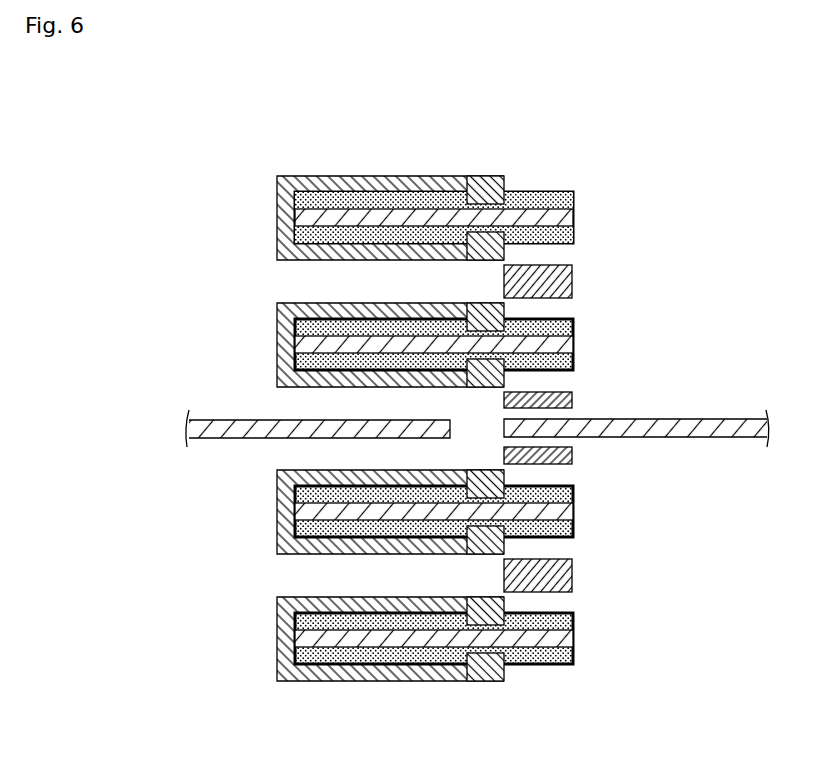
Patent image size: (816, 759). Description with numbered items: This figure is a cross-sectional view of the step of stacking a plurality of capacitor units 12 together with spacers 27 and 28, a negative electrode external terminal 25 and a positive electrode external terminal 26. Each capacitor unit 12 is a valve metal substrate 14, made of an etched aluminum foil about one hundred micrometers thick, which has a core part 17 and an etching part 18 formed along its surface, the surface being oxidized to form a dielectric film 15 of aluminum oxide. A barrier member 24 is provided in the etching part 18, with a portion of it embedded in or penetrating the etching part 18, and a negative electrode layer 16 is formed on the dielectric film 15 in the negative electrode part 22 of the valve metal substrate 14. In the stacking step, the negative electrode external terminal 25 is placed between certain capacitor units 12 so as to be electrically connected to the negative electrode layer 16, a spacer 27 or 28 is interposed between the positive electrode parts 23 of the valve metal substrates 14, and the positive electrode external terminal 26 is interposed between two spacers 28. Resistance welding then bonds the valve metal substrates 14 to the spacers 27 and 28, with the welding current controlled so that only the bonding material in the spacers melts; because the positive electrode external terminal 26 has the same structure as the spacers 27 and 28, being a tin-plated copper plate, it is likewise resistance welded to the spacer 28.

The capacitor unit 12 is at (456, 169).
The valve metal substrate 14 is at (511, 177).
The dielectric film 15 is at (434, 169).
The negative electrode layer 16 is at (390, 171).
The core part 17 is at (482, 219).
The etching part 18 is at (482, 220).
The negative electrode part 22 is at (277, 685).
The positive electrode part 23 is at (504, 685).
The barrier member 24 is at (484, 141).
The negative electrode external terminal 25 is at (203, 425).
The positive electrode external terminal 26 is at (710, 425).
The spacer 27 is at (572, 282).
The spacer 28 is at (568, 401).